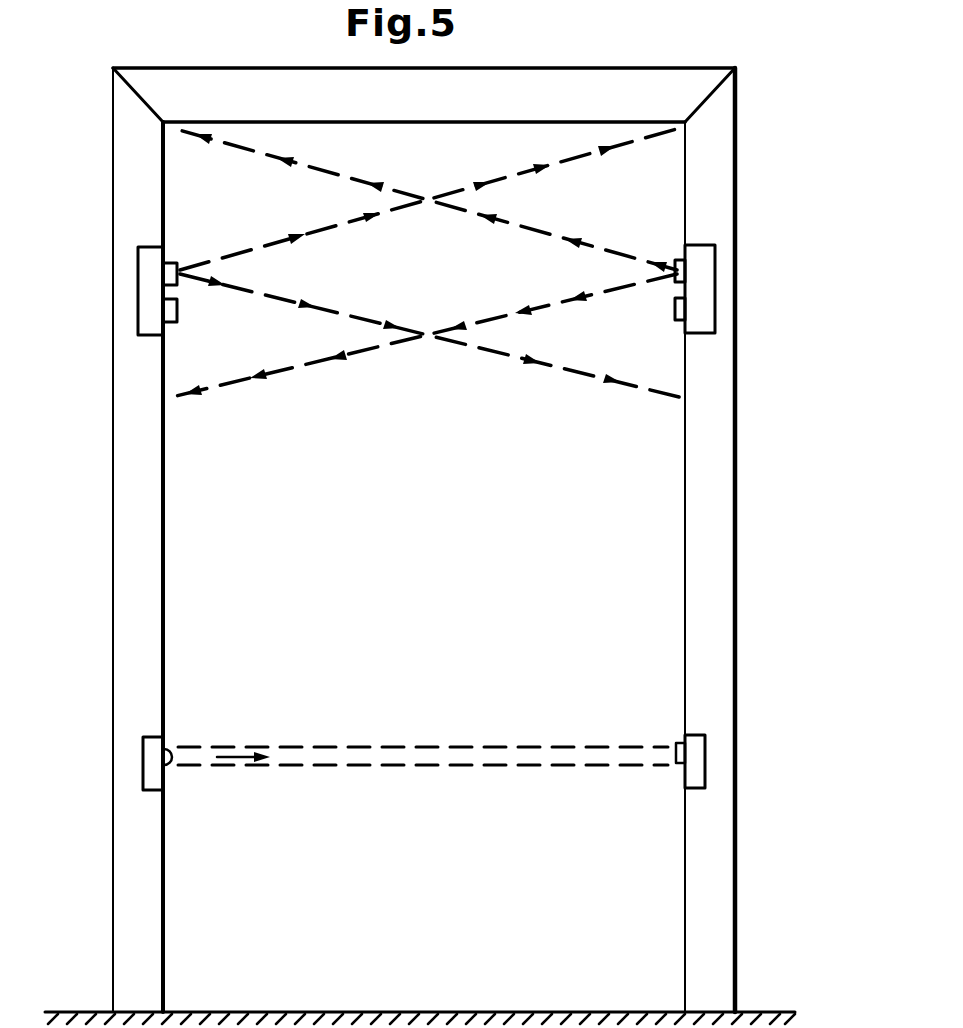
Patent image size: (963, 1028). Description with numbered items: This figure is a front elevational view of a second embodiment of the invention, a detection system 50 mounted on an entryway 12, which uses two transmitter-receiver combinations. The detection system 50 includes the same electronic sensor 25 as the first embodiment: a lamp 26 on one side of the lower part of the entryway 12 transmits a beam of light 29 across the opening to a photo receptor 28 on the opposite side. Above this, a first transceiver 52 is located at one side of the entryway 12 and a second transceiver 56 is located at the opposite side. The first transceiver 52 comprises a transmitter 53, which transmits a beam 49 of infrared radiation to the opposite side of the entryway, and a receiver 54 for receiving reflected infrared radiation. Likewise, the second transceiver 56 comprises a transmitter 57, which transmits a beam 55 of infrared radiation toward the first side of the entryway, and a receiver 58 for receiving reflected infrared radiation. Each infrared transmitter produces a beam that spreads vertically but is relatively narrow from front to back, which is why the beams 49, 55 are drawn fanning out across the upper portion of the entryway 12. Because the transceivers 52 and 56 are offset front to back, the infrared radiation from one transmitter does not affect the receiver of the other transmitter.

The entryway 12 is at (686, 175).
The detection system 50 is at (119, 64).
The first transceiver 52 is at (150, 290).
The transmitter 53 is at (170, 272).
The receiver 54 is at (165, 315).
The second transceiver 56 is at (700, 287).
The transmitter 57 is at (683, 272).
The receiver 58 is at (688, 310).
The beam of infrared radiation 49 is at (362, 212).
The beam of infrared radiation 55 is at (500, 216).
The electronic sensor 25 is at (102, 734).
The lamp 26 is at (160, 760).
The photo receptor 28 is at (690, 750).
The beam of light 29 is at (300, 768).